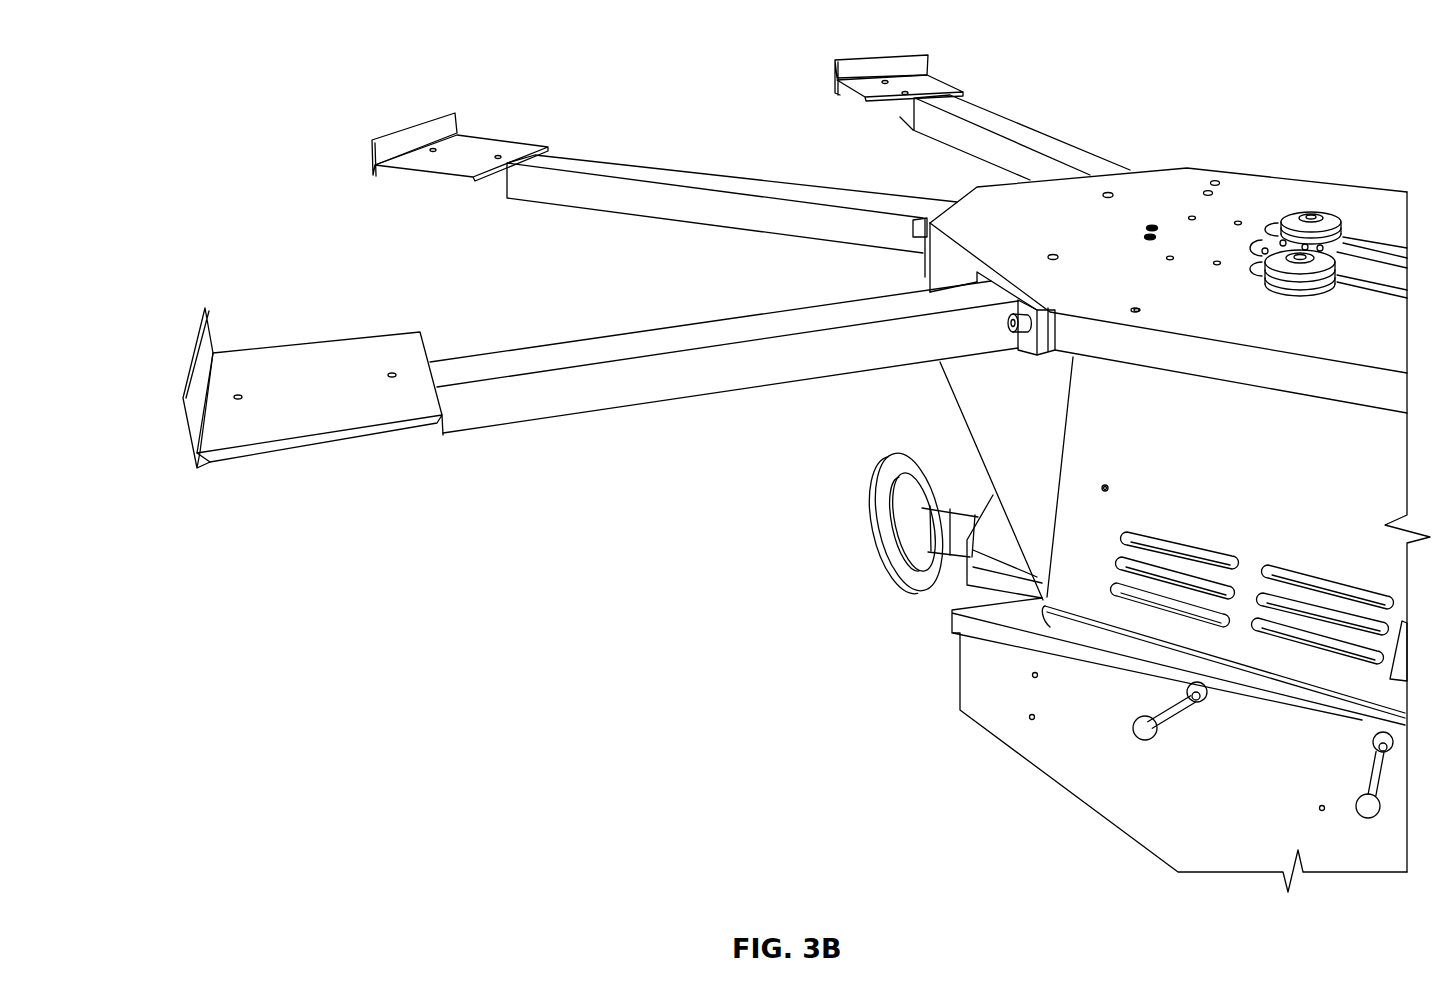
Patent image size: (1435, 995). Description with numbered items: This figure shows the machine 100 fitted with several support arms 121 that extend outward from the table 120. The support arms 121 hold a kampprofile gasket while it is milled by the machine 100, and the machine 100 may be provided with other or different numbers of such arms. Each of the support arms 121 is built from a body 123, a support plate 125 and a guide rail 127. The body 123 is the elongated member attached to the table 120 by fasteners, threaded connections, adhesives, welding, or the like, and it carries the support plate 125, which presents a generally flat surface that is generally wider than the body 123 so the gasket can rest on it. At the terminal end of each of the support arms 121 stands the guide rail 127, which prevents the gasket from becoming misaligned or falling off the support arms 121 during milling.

The machine 100 is at (1168, 82).
The table 120 is at (1197, 187).
The support arms 121 is at (964, 78).
The body 123 is at (848, 357).
The support plate 125 is at (417, 380).
The guide rail 127 is at (187, 435).